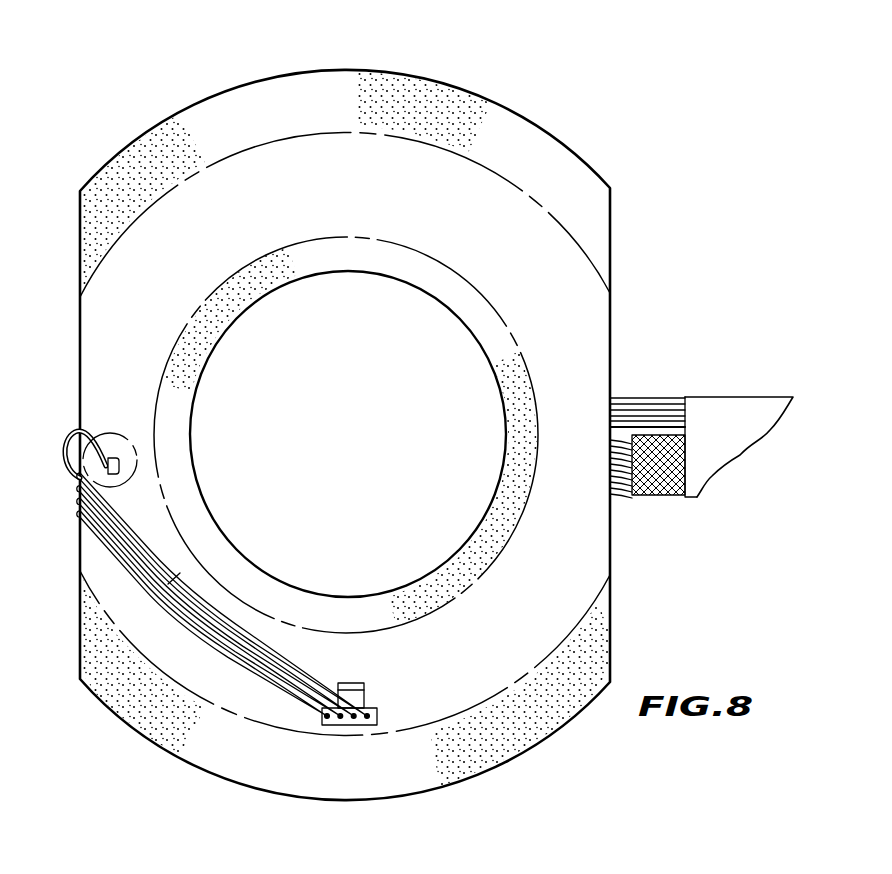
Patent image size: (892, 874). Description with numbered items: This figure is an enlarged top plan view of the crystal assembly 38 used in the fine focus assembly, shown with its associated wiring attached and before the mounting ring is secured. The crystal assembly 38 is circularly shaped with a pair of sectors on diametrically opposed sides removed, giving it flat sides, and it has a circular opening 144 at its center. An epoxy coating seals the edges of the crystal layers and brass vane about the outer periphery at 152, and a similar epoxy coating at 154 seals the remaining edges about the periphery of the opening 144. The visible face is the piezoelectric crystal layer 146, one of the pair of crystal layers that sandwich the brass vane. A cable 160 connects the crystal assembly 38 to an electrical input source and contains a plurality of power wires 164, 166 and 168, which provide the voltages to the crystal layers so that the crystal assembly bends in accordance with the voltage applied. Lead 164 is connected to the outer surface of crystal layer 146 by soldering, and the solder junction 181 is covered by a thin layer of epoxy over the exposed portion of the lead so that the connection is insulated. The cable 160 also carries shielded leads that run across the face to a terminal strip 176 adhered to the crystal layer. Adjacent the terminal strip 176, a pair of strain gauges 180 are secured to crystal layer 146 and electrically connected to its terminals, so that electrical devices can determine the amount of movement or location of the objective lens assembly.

The crystal assembly 38 is at (613, 213).
The epoxy coating 152 is at (468, 54).
The piezoelectric crystal layer 146 is at (508, 188).
The epoxy coating 154 is at (510, 483).
The circular opening 144 is at (330, 272).
The power lead 164 is at (76, 430).
The power lead 166 is at (627, 412).
The power lead 168 is at (621, 427).
The cable 160 is at (745, 443).
The terminal post 181 is at (112, 433).
The strain gauges 180 is at (364, 686).
The terminal strip 176 is at (378, 718).